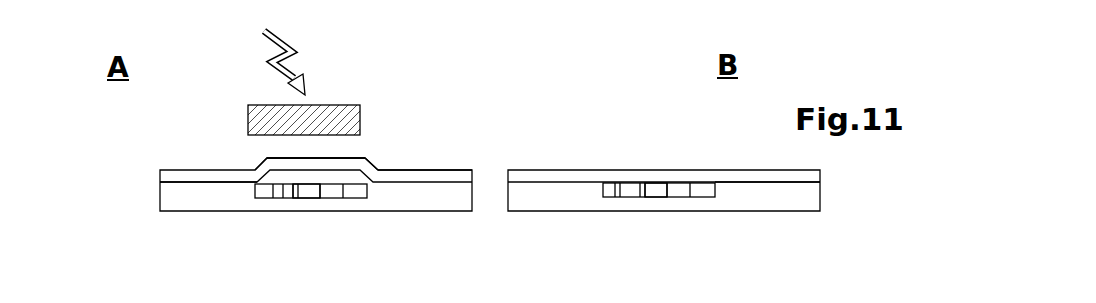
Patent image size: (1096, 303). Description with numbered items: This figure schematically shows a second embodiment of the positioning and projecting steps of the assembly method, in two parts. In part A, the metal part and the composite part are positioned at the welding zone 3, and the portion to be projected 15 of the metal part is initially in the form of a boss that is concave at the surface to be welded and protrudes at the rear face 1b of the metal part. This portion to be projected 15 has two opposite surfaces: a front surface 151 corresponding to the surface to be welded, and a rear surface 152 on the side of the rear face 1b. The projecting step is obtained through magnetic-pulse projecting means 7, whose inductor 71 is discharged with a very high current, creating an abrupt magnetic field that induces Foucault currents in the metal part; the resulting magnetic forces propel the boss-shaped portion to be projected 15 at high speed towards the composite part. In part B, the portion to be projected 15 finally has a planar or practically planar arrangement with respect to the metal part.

The rear face 1b is at (430, 167).
The welding zone 3 is at (658, 174).
The magnetic-pulse projecting means 7 is at (332, 107).
The inductor 71 is at (350, 120).
The portion to be projected 15 is at (277, 158).
The front surface 151 is at (325, 157).
The rear surface 152 is at (285, 148).